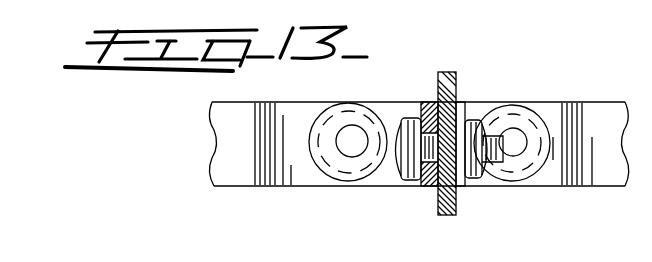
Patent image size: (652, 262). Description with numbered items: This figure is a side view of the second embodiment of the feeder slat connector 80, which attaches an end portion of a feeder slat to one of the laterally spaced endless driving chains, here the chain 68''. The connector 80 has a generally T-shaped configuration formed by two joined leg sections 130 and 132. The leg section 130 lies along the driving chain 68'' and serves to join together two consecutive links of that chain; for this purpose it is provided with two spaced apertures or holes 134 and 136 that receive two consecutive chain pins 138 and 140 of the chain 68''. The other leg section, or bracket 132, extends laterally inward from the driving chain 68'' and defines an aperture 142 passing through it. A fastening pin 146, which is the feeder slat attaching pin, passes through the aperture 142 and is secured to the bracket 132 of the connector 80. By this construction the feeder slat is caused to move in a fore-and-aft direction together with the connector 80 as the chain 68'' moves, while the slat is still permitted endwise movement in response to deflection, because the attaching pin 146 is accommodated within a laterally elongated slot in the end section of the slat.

The endless chain 68'' is at (417, 167).
The leg section 130 is at (316, 130).
The leg section or bracket 132 is at (436, 190).
The aperture or hole 134 is at (350, 138).
The aperture or hole 136 is at (515, 130).
The chain pin 138 is at (352, 158).
The chain pin 140 is at (514, 158).
The aperture 142 is at (401, 128).
The fastening pin 146 is at (460, 135).
The connector 80 is at (493, 92).